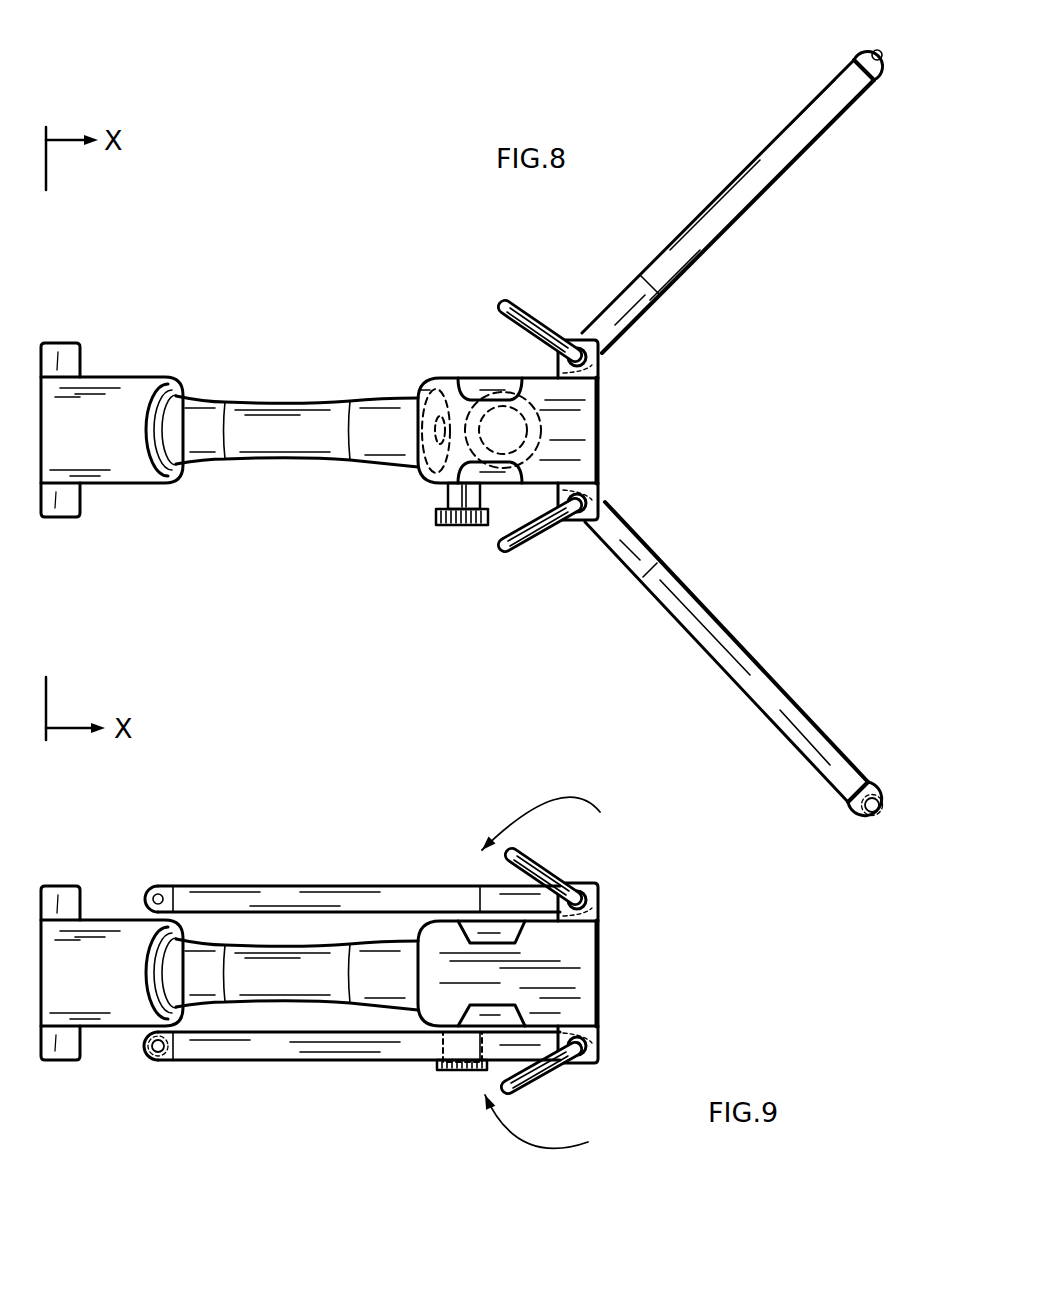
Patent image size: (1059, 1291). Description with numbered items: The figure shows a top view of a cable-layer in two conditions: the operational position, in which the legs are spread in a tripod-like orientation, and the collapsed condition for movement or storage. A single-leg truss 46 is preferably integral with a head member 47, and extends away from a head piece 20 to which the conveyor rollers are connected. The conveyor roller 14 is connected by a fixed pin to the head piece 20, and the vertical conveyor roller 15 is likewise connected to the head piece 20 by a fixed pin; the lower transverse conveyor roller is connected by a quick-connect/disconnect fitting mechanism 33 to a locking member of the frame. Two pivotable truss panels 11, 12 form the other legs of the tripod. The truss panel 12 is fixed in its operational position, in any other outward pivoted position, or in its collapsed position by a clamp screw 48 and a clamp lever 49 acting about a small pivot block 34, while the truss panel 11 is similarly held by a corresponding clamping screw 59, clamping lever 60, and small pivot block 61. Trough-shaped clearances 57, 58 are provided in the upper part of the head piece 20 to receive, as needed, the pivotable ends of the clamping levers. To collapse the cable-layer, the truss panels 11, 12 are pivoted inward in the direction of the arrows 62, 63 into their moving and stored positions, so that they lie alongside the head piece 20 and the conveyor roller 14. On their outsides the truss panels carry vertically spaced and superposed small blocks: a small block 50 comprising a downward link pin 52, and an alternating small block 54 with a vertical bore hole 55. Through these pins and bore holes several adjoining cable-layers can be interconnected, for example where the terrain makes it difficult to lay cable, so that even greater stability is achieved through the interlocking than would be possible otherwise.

In FIG. 8, the truss panel 11 is at (732, 178).
In FIG. 9, the truss panel 11 is at (351, 854).
In FIG. 8, the truss panel 12 is at (734, 690).
In FIG. 9, the truss panel 12 is at (338, 1091).
In FIG. 8, the conveyor roller 14 is at (295, 395).
In FIG. 9, the conveyor roller 14 is at (297, 917).
In FIG. 8, the vertical conveyor roller 15 is at (560, 444).
In FIG. 8, the head piece 20 is at (508, 432).
In FIG. 9, the head piece 20 is at (545, 973).
In FIG. 8, the quick-connect/disconnect fitting mechanism 33 is at (458, 526).
In FIG. 9, the quick-connect/disconnect fitting mechanism 33 is at (450, 1086).
In FIG. 8, the small pivot block 34 is at (602, 503).
In FIG. 9, the small pivot block 34 is at (619, 1027).
In FIG. 8, the truss 46 is at (66, 362).
In FIG. 9, the truss 46 is at (65, 942).
In FIG. 8, the head member 47 is at (105, 422).
In FIG. 9, the head member 47 is at (112, 1024).
In FIG. 8, the clamp screw 48 is at (598, 500).
In FIG. 9, the clamp screw 48 is at (593, 1063).
In FIG. 8, the clamp lever 49 is at (540, 548).
In FIG. 9, the clamp lever 49 is at (542, 1088).
In FIG. 8, the small block 50 is at (852, 808).
In FIG. 9, the small block 50 is at (172, 1062).
In FIG. 8, the downward link pin 52 is at (871, 788).
In FIG. 9, the downward link pin 52 is at (158, 1055).
In FIG. 8, the small block 54 is at (872, 84).
In FIG. 9, the small block 54 is at (173, 896).
In FIG. 8, the vertical bore hole 55 is at (868, 50).
In FIG. 9, the vertical bore hole 55 is at (158, 890).
In FIG. 8, the trough-shaped clearance 57 is at (450, 488).
In FIG. 8, the trough-shaped clearance 58 is at (476, 378).
In FIG. 8, the clamping screw 59 is at (600, 360).
In FIG. 9, the clamping screw 59 is at (610, 882).
In FIG. 8, the clamping lever 60 is at (533, 318).
In FIG. 9, the clamping lever 60 is at (552, 866).
In FIG. 8, the small pivot block 61 is at (583, 340).
In FIG. 9, the small pivot block 61 is at (618, 910).
In FIG. 9, the arrow 62 is at (530, 1145).
In FIG. 9, the arrow 63 is at (553, 800).